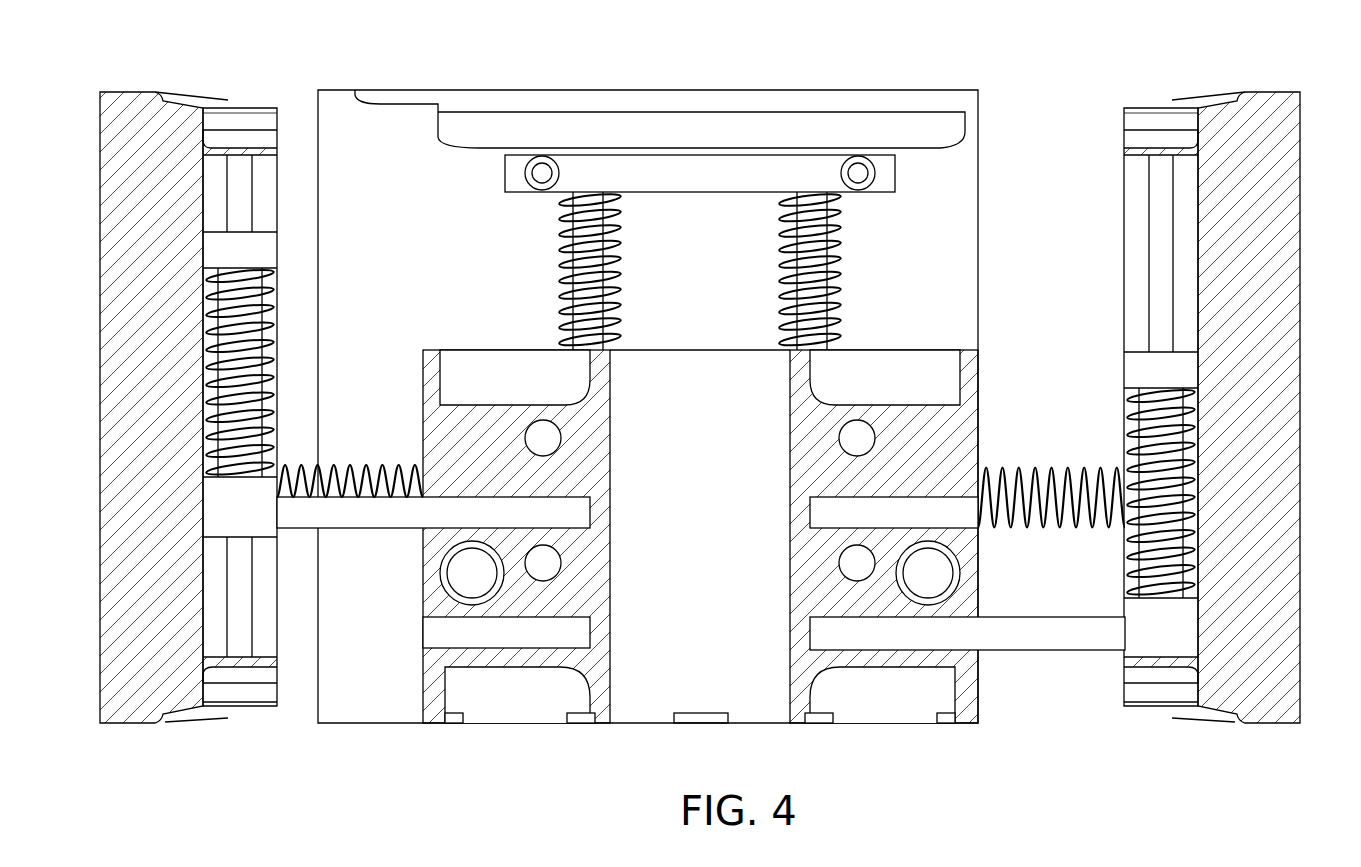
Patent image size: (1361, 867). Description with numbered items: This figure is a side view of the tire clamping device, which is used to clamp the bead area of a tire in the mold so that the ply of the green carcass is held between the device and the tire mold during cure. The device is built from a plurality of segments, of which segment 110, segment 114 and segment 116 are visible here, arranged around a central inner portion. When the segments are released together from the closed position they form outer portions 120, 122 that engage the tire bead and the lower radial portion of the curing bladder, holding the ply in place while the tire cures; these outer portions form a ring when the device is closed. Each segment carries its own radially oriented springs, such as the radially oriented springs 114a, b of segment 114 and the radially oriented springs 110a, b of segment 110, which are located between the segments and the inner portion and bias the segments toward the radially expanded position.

The segment 110 is at (1290, 324).
The segment 114 is at (110, 324).
The segment 116 is at (689, 100).
The outer portion 120 is at (228, 106).
The outer portion 122 is at (228, 708).
The radially oriented springs 114a, b is at (380, 468).
The radially oriented springs 110a, b is at (1043, 470).